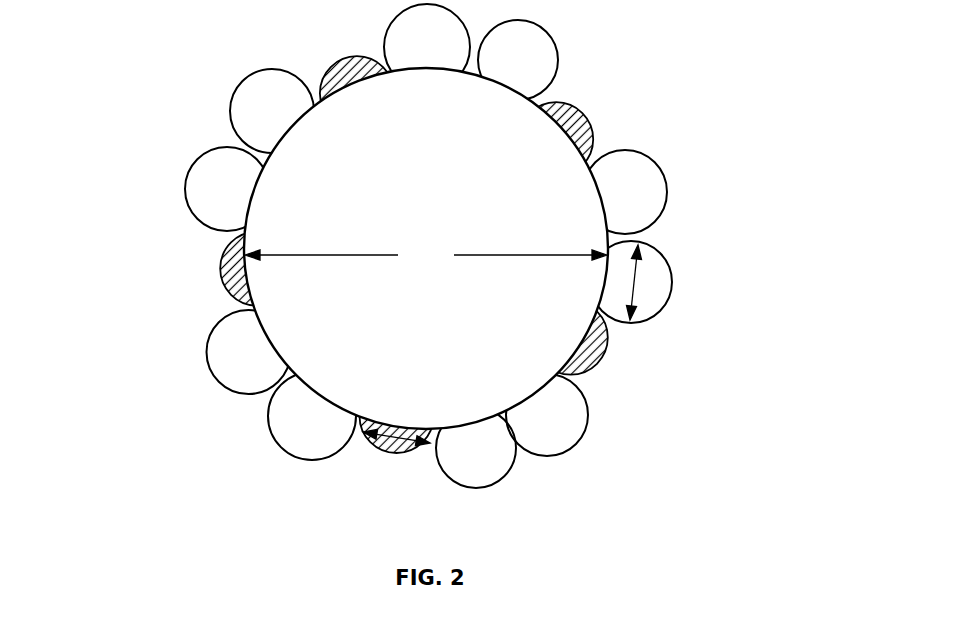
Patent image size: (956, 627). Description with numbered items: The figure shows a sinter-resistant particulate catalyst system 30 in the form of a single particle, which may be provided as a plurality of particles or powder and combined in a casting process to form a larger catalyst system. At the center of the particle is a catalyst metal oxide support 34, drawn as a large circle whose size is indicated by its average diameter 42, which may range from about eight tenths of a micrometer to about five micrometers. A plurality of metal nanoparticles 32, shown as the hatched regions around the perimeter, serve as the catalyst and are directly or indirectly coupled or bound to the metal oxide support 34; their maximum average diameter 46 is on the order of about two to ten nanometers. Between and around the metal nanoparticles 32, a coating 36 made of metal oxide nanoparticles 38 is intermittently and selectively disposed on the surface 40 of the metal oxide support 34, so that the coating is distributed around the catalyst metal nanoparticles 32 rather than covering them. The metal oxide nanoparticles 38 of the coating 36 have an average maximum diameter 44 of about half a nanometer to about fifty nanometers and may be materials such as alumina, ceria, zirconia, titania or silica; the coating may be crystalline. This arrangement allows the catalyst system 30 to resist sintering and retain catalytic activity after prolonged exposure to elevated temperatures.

The catalyst system 30 is at (427, 261).
The metal nanoparticles 32 is at (587, 103).
The catalyst metal oxide support 34 is at (408, 188).
The coating 36 is at (272, 57).
The metal oxide nanoparticles 38 is at (444, 56).
The surface 40 is at (603, 195).
The average diameter 42 is at (426, 255).
The average maximum diameter 44 is at (633, 282).
The maximum average diameter 46 is at (383, 450).